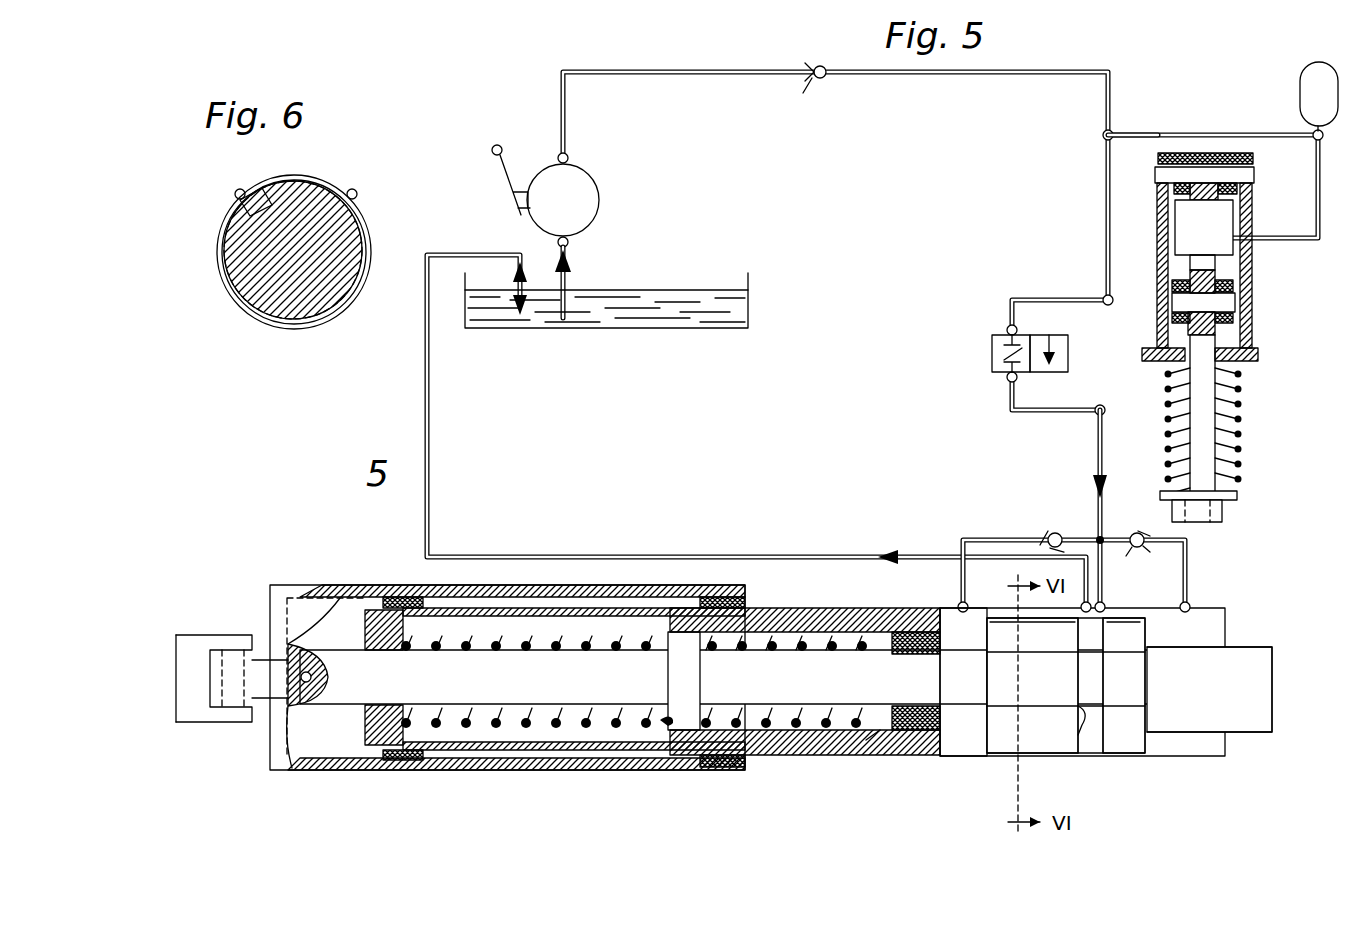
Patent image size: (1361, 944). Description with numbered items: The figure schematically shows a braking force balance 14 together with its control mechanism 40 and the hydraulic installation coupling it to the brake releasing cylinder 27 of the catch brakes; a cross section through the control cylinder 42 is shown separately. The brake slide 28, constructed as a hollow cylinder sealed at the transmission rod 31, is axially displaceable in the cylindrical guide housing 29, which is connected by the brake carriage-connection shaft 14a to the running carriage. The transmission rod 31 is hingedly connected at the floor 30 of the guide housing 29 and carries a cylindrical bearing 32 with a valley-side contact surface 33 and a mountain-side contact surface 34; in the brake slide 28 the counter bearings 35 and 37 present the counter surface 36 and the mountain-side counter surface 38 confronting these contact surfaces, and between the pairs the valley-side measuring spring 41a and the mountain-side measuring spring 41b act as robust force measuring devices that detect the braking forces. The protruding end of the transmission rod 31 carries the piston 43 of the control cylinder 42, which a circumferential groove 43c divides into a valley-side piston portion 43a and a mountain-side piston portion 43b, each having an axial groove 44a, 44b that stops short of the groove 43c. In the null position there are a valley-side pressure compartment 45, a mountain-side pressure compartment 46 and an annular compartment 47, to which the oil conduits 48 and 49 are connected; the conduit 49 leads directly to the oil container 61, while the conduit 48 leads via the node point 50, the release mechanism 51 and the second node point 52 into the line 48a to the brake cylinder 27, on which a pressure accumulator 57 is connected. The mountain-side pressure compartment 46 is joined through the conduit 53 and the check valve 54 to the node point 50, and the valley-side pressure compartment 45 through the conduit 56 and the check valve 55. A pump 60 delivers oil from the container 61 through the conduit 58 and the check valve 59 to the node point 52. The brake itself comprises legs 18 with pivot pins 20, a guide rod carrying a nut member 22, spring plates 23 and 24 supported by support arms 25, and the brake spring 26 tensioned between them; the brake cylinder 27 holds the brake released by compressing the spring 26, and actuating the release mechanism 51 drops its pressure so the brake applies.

In FIG. 5, the force balance 14 is at (361, 585).
In FIG. 5, the brake carriage-connection shaft 14a is at (228, 630).
In FIG. 5, the legs 18 is at (1250, 192).
In FIG. 5, the pivot pins 20 is at (1190, 300).
In FIG. 5, the threaded nut member 22 is at (1222, 513).
In FIG. 5, the spring plate 23 is at (1225, 497).
In FIG. 5, the second spring plate 24 is at (1250, 362).
In FIG. 5, the support arms 25 is at (1157, 228).
In FIG. 5, the brake spring 26 is at (1225, 455).
In FIG. 5, the brake releasing cylinder 27 is at (1220, 250).
In FIG. 5, the brake slide 28 is at (842, 612).
In FIG. 5, the guide housing 29 is at (525, 600).
In FIG. 5, the floor 30 is at (290, 740).
In FIG. 5, the transmission rod 31 is at (580, 690).
In FIG. 5, the cylindrical bearing 32 is at (684, 650).
In FIG. 5, the valley-side contact surface 33 is at (664, 720).
In FIG. 5, the mountain-side contact surface 34 is at (712, 638).
In FIG. 5, the valley-side counter bearing 35 is at (376, 620).
In FIG. 5, the counter surface 36 is at (403, 755).
In FIG. 5, the mountain-side counter bearing 37 is at (900, 630).
In FIG. 5, the spring end 38 is at (866, 740).
In FIG. 5, the control mechanism 40 is at (1233, 648).
In FIG. 5, the valley-side measuring spring 41a is at (485, 725).
In FIG. 5, the mountain-side measuring spring 41b is at (790, 725).
In FIG. 5, the control cylinder 42 is at (968, 760).
In FIG. 6, the control cylinder 42 is at (364, 232).
In FIG. 5, the piston 43 is at (1035, 660).
In FIG. 5, the valley-side piston portion 43a is at (1010, 745).
In FIG. 6, the valley-side piston portion 43a is at (325, 302).
In FIG. 5, the mountain-side piston portion 43b is at (1133, 740).
In FIG. 5, the circumferential groove 43c is at (1080, 735).
In FIG. 6, the circumferential groove 43c is at (225, 290).
In FIG. 5, the axial groove 44a is at (1036, 620).
In FIG. 6, the axial groove 44a is at (245, 210).
In FIG. 5, the axial groove 44b is at (1122, 620).
In FIG. 5, the valley-side pressure compartment 45 is at (955, 735).
In FIG. 5, the mountain-side pressure compartment 46 is at (1205, 735).
In FIG. 5, the annular compartment 47 is at (1092, 752).
In FIG. 5, the oil conduit 48 is at (1098, 440).
In FIG. 6, the oil conduit 48 is at (364, 184).
In FIG. 5, the oil conduit 48a is at (1135, 135).
In FIG. 5, the oil conduit 49 is at (1010, 555).
In FIG. 6, the oil conduit 49 is at (236, 190).
In FIG. 5, the node point 50 is at (1102, 538).
In FIG. 5, the release mechanism 51 is at (1000, 350).
In FIG. 5, the second node point 52 is at (1192, 180).
In FIG. 5, the conduit 53 is at (1188, 568).
In FIG. 5, the check valve 54 is at (1136, 533).
In FIG. 5, the check valve 55 is at (1052, 533).
In FIG. 5, the conduit 56 is at (964, 570).
In FIG. 5, the pressure accumulator 57 is at (1300, 95).
In FIG. 5, the conduit 58 is at (943, 75).
In FIG. 5, the check valve 59 is at (813, 89).
In FIG. 5, the pump 60 is at (553, 176).
In FIG. 5, the oil container 61 is at (668, 290).